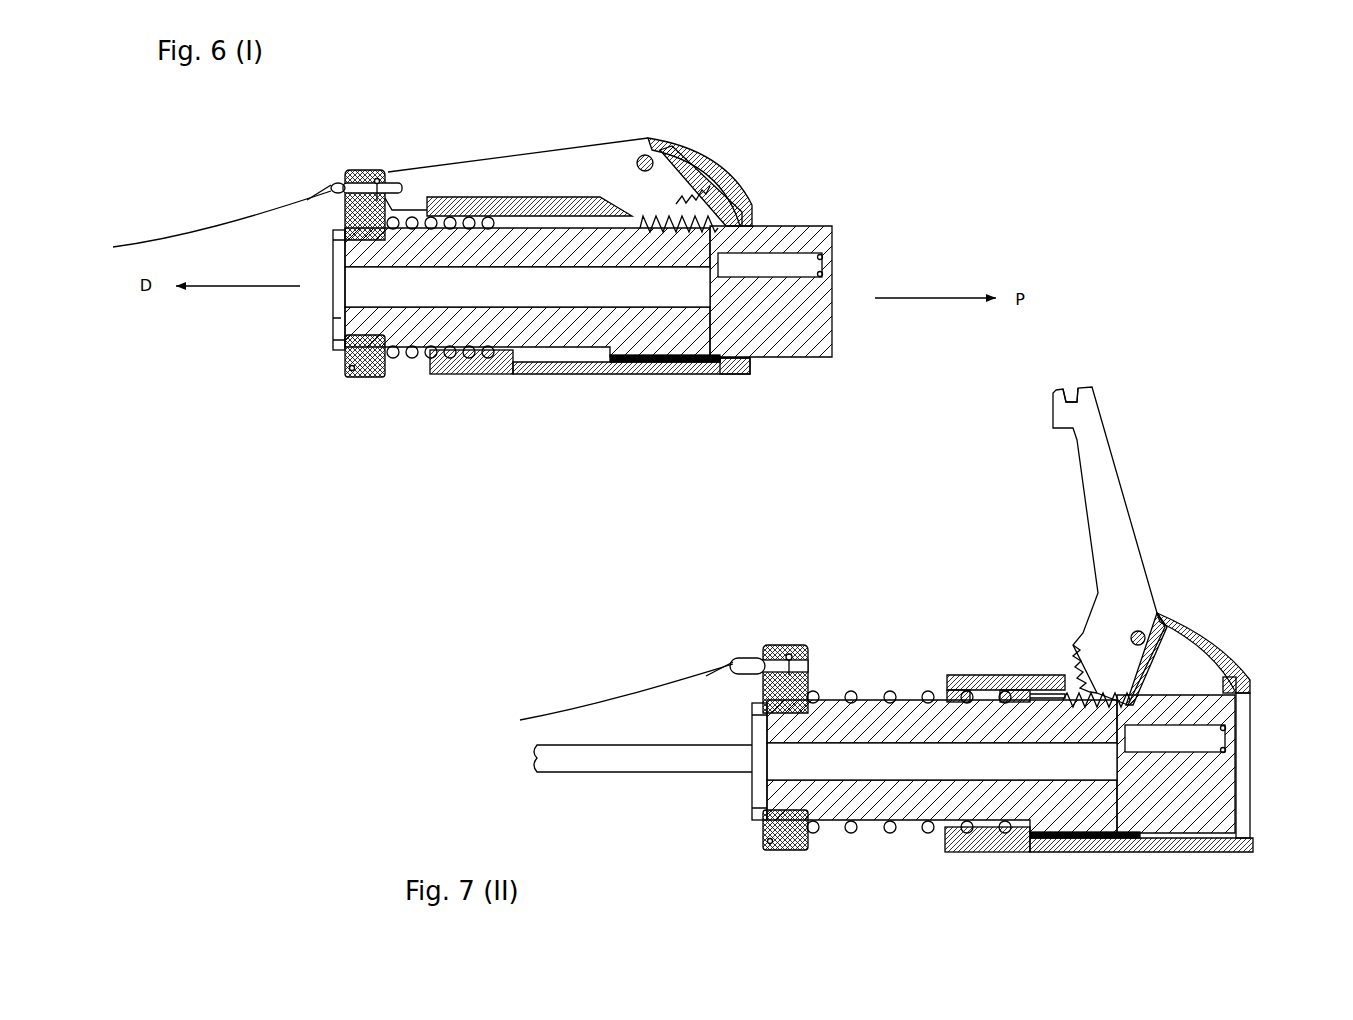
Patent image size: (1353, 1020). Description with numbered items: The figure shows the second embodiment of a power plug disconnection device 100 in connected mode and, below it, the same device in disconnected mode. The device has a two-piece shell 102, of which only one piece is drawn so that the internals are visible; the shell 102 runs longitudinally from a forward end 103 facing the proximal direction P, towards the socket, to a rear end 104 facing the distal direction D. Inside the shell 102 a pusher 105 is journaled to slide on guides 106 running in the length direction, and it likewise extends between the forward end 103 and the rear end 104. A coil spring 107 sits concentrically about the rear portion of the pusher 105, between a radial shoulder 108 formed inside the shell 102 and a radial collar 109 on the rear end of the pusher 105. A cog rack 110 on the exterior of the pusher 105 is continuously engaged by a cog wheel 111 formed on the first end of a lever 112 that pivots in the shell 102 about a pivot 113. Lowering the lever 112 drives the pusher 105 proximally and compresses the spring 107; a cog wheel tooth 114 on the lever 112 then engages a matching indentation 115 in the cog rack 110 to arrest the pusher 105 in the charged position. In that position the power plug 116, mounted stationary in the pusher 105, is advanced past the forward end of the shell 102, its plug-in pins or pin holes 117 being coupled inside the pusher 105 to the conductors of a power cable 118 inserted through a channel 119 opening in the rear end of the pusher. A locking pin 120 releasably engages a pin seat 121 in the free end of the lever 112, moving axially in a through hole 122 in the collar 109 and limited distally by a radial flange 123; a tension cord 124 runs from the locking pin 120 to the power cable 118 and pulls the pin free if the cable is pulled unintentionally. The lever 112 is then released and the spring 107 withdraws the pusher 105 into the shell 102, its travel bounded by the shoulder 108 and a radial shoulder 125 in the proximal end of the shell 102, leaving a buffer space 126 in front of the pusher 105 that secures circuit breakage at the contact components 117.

In FIG. 6, the power plug disconnection device 100 is at (754, 88).
In FIG. 7, the power plug disconnection device 100 is at (1238, 492).
In FIG. 6, the two-piece shell 102 is at (638, 383).
In FIG. 7, the two-piece shell 102 is at (1242, 636).
In FIG. 6, the forward end 103 is at (922, 336).
In FIG. 6, the rear end 104 is at (255, 359).
In FIG. 6, the pusher 105 is at (796, 364).
In FIG. 7, the pusher 105 is at (1167, 838).
In FIG. 6, the guides 106 is at (587, 375).
In FIG. 6, the coil spring 107 is at (407, 360).
In FIG. 7, the coil spring 107 is at (887, 690).
In FIG. 6, the radial shoulder 108 is at (560, 197).
In FIG. 7, the radial shoulder 108 is at (1017, 680).
In FIG. 6, the radial collar 109 is at (348, 370).
In FIG. 7, the radial collar 109 is at (787, 643).
In FIG. 6, the cog rack 110 is at (710, 205).
In FIG. 6, the cog wheel 111 is at (682, 194).
In FIG. 6, the lever 112 is at (487, 175).
In FIG. 7, the lever 112 is at (1103, 557).
In FIG. 6, the pivot 113 is at (635, 158).
In FIG. 7, the pivot 113 is at (1153, 610).
In FIG. 7, the cog wheel tooth 114 is at (1071, 631).
In FIG. 7, the indentation 115 is at (1057, 677).
In FIG. 6, the power plug 116 is at (812, 338).
In FIG. 7, the power plug 116 is at (1237, 803).
In FIG. 6, the plug-in pins or pin holes 117 is at (835, 265).
In FIG. 7, the plug-in pins or pin holes 117 is at (1233, 742).
In FIG. 7, the power cable 118 is at (602, 760).
In FIG. 6, the channel 119 is at (494, 297).
In FIG. 7, the channel 119 is at (892, 771).
In FIG. 6, the locking pin 120 is at (333, 184).
In FIG. 7, the locking pin 120 is at (741, 658).
In FIG. 6, the pin seat 121 is at (380, 170).
In FIG. 7, the pin seat 121 is at (1070, 390).
In FIG. 7, the through hole 122 is at (807, 677).
In FIG. 7, the radial flange 123 is at (807, 647).
In FIG. 6, the tension cord 124 is at (183, 236).
In FIG. 7, the tension cord 124 is at (590, 707).
In FIG. 6, the radial shoulder 125 is at (740, 382).
In FIG. 7, the radial shoulder 125 is at (1243, 697).
In FIG. 7, the buffer space 126 is at (1245, 773).